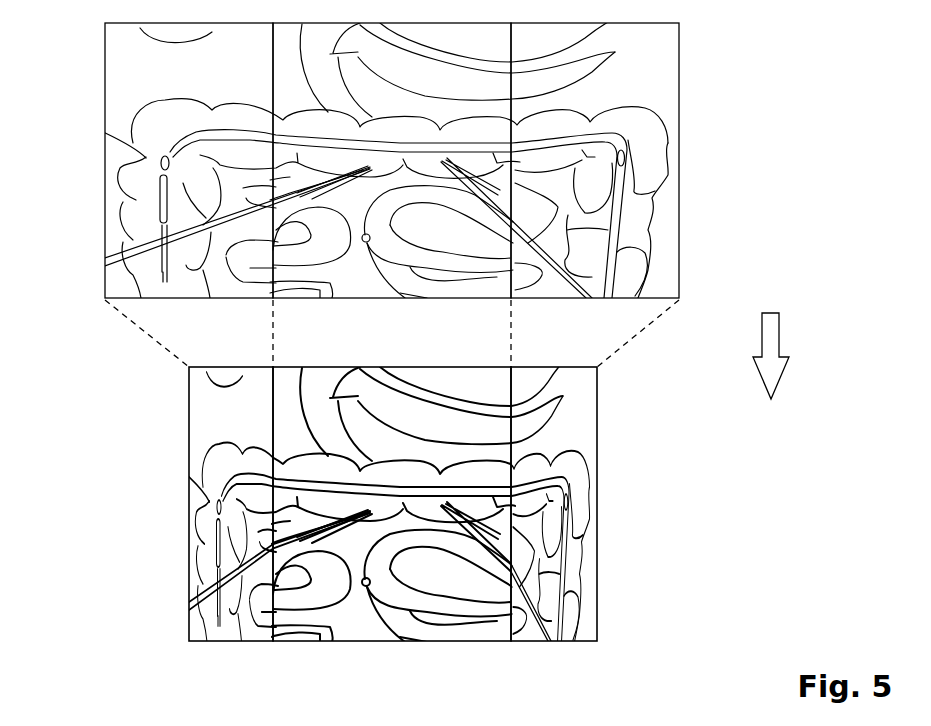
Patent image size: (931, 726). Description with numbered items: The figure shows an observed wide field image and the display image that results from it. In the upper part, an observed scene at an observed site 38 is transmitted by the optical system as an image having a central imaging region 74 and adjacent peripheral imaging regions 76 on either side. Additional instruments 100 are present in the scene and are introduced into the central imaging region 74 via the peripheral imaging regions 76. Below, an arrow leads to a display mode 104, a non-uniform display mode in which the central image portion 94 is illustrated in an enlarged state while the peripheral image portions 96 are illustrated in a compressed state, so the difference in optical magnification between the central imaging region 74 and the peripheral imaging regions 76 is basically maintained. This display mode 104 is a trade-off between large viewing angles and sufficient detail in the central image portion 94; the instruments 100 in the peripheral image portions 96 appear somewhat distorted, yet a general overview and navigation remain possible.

The observed site 38 is at (426, 191).
The additional instruments 100 is at (152, 192).
The peripheral imaging regions 76 is at (105, 300).
The central imaging region 74 is at (511, 300).
The display mode 104 is at (342, 533).
The peripheral image portions 96 is at (189, 642).
The central image portion 94 is at (511, 642).